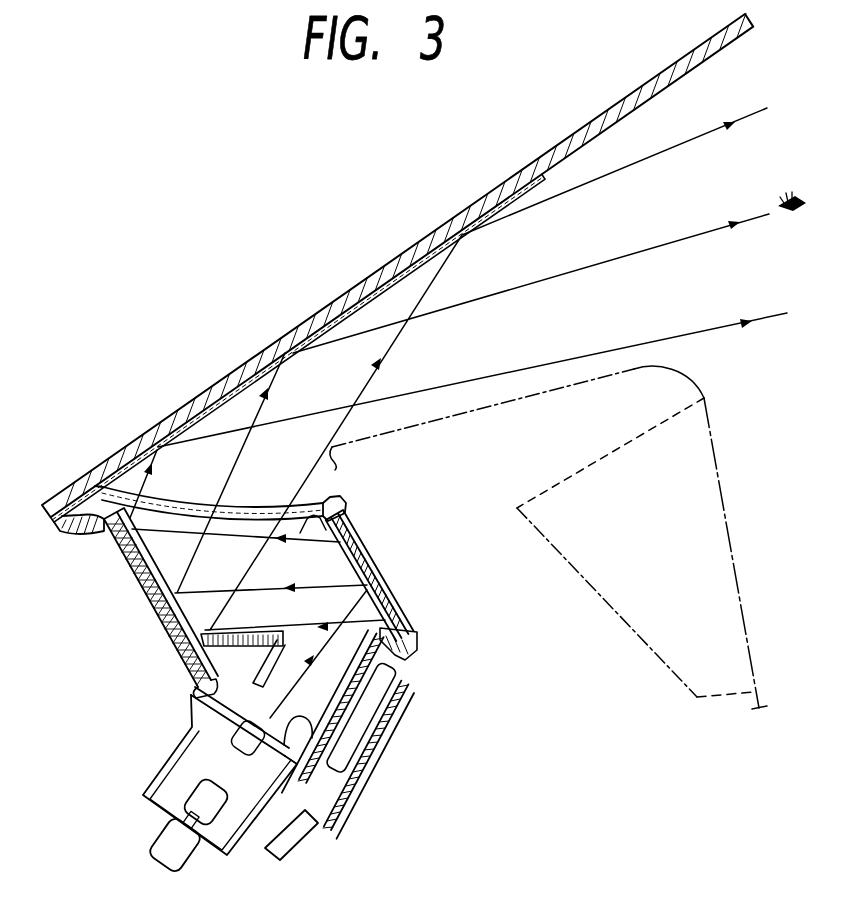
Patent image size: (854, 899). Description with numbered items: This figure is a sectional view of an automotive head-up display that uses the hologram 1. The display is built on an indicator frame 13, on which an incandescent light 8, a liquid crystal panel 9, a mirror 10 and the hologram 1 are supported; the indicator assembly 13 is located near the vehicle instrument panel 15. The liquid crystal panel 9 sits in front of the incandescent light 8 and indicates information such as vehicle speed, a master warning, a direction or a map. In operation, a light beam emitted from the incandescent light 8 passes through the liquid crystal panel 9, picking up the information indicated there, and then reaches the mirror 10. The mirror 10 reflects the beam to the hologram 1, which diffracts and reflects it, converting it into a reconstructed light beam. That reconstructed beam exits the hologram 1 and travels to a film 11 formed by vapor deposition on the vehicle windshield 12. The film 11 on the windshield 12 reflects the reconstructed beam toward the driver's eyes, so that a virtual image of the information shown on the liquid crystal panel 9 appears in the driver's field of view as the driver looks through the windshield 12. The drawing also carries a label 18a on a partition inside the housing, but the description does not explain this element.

The hologram 1 is at (158, 606).
The incandescent light 8 is at (217, 800).
The liquid crystal panel 9 is at (340, 782).
The mirror 10 is at (381, 557).
The film 11 is at (352, 306).
The vehicle windshield 12 is at (564, 140).
The indicator frame 13 is at (327, 795).
The vehicle instrument panel 15 is at (694, 383).
The partition wall 18a is at (240, 636).